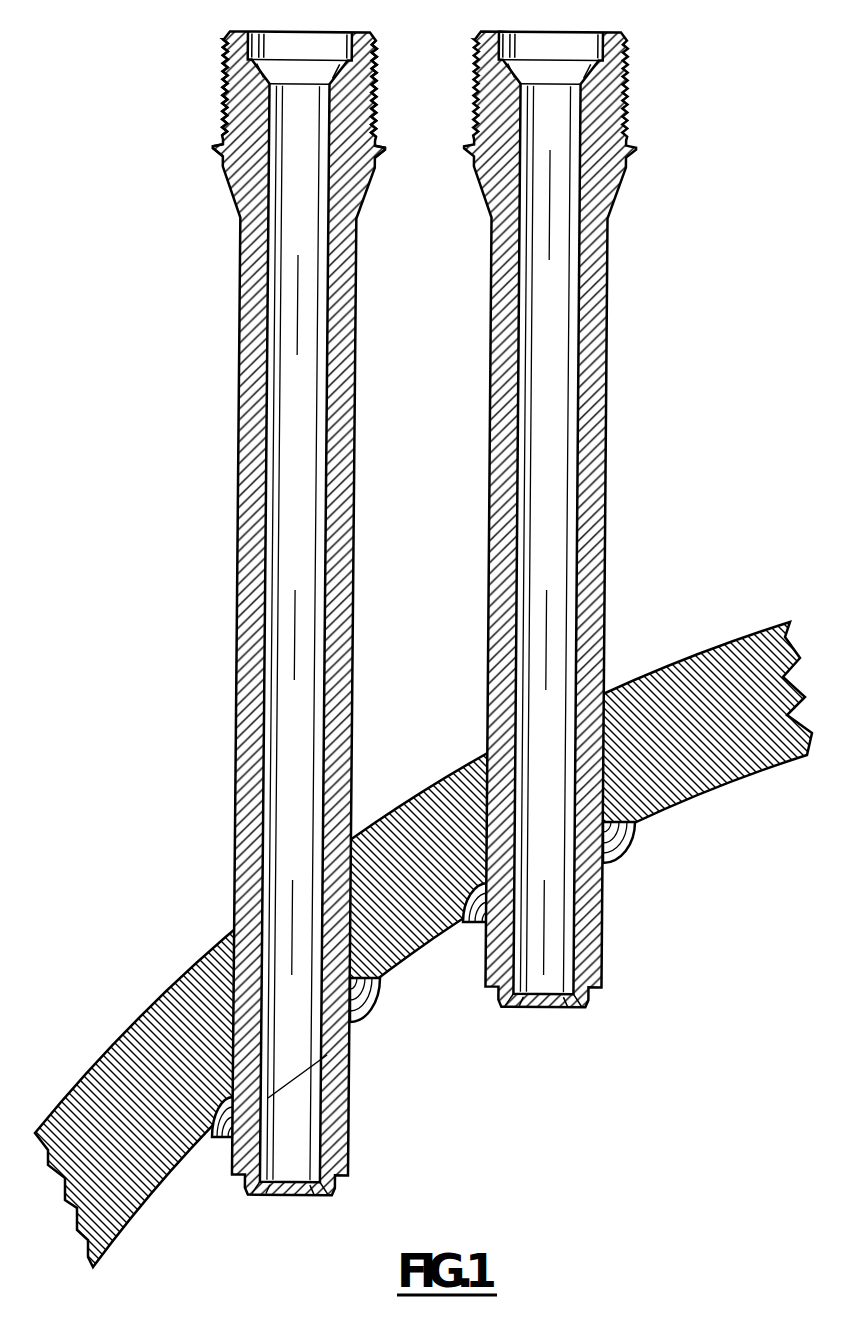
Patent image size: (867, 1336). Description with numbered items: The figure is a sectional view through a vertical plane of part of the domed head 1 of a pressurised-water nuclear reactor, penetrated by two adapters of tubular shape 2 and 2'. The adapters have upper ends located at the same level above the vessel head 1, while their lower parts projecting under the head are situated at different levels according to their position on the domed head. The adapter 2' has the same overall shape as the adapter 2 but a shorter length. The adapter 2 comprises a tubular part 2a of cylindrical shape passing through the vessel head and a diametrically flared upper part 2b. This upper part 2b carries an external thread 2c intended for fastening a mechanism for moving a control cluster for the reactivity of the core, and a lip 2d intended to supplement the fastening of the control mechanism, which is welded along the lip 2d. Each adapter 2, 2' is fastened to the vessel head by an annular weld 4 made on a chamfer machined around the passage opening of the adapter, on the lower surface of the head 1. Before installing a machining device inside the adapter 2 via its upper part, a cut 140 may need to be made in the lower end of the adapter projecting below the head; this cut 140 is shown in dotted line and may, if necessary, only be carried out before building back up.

The domed head 1 is at (177, 1022).
The adapter 2 is at (281, 613).
The adapter 2' is at (572, 519).
The tubular part 2a is at (343, 450).
The flared upper part 2b is at (360, 120).
The external thread 2c is at (218, 102).
The lip 2d is at (217, 148).
The annular weld 4 is at (368, 1005).
The cut 140 is at (320, 1075).